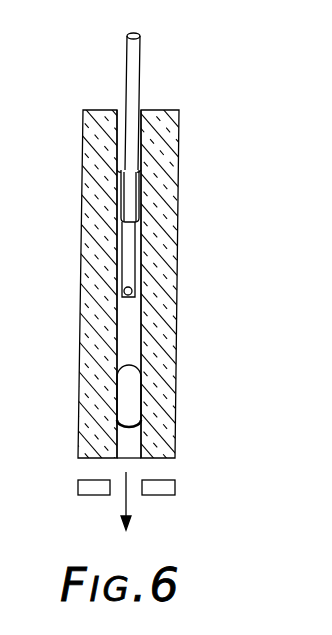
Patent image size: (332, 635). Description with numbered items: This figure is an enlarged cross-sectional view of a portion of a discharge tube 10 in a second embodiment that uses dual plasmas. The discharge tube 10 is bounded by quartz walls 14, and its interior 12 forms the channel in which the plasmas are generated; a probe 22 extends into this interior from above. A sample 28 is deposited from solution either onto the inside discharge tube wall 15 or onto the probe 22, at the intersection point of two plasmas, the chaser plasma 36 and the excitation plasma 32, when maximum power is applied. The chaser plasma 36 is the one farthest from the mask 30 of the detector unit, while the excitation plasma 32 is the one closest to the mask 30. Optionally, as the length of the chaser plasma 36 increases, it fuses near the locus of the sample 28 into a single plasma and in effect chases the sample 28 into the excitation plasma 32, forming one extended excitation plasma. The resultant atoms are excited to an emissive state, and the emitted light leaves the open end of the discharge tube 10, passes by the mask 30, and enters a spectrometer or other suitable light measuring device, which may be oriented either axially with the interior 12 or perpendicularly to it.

The discharge tube 10 is at (74, 405).
The interior 12 is at (133, 345).
The quartz walls 14 is at (173, 278).
The inside discharge tube wall 15 is at (121, 318).
The probe 22 is at (135, 60).
The sample 28 is at (126, 290).
The mask 30 is at (95, 496).
The excitation plasma 32 is at (133, 401).
The chaser plasma 36 is at (140, 195).